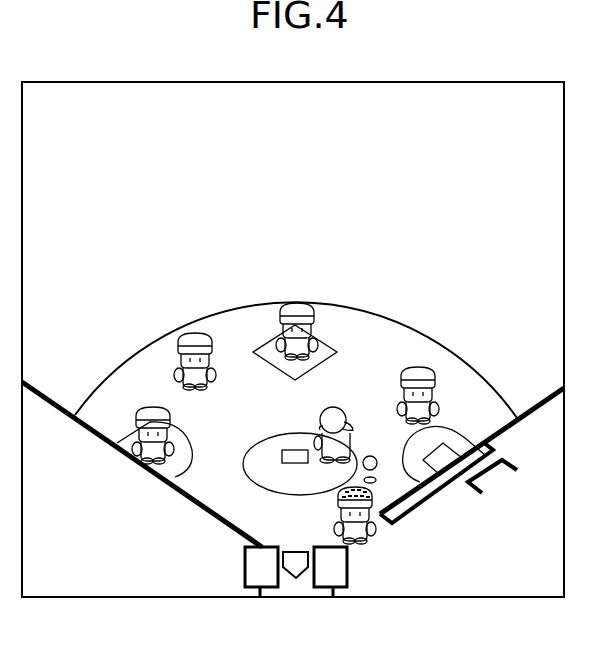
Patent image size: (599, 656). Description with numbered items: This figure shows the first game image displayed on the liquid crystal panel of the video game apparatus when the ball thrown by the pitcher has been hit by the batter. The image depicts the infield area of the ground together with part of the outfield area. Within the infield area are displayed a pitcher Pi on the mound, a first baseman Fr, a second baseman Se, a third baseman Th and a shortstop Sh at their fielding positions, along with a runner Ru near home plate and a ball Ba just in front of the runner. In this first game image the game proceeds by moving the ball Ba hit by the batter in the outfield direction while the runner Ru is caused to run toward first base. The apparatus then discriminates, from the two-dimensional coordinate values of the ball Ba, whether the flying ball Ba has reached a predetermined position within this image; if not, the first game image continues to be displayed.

The shortstop Sh is at (187, 333).
The second baseman Se is at (320, 312).
The first baseman Fr is at (433, 367).
The third baseman Th is at (147, 405).
The pitcher Pi is at (318, 415).
The ball Ba is at (383, 465).
The runner Ru is at (370, 533).